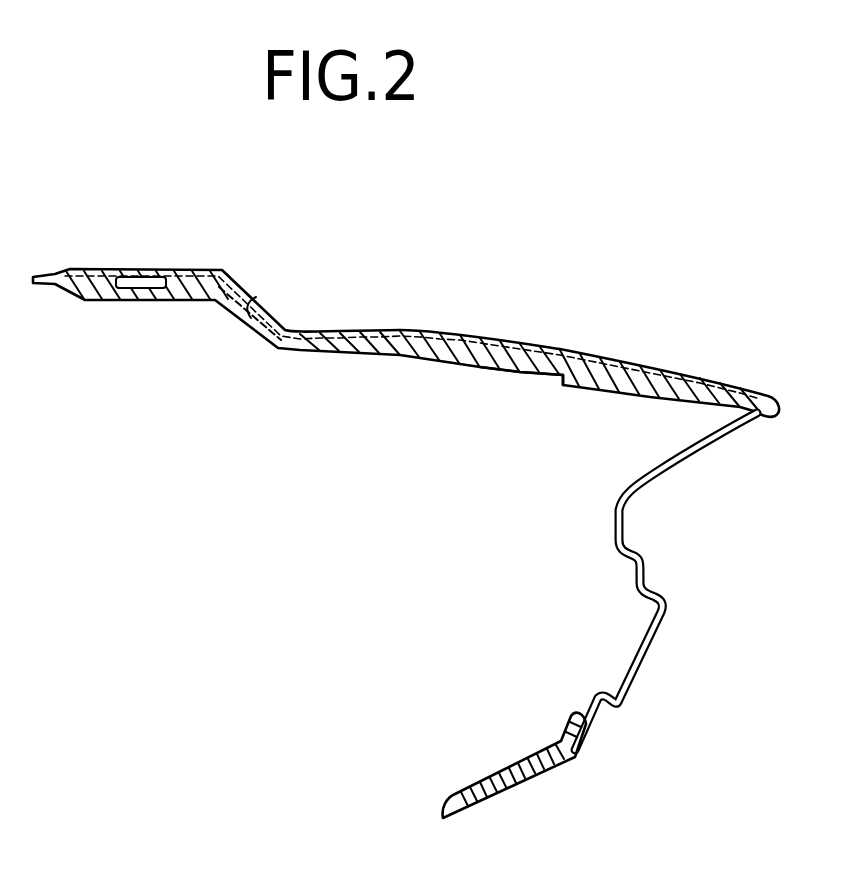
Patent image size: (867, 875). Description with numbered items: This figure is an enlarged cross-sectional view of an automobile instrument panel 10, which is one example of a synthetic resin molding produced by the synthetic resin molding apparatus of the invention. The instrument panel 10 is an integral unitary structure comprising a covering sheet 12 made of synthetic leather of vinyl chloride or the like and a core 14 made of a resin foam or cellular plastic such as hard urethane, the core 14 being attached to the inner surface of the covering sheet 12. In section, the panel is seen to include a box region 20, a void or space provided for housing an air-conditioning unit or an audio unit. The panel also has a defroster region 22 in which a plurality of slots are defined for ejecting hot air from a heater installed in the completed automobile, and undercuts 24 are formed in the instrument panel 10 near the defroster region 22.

The instrument panel 10 is at (608, 244).
The covering sheet 12 is at (540, 347).
The core 14 is at (520, 367).
The box region 20 is at (643, 564).
The defroster region 22 is at (147, 278).
The undercuts 24 is at (263, 317).